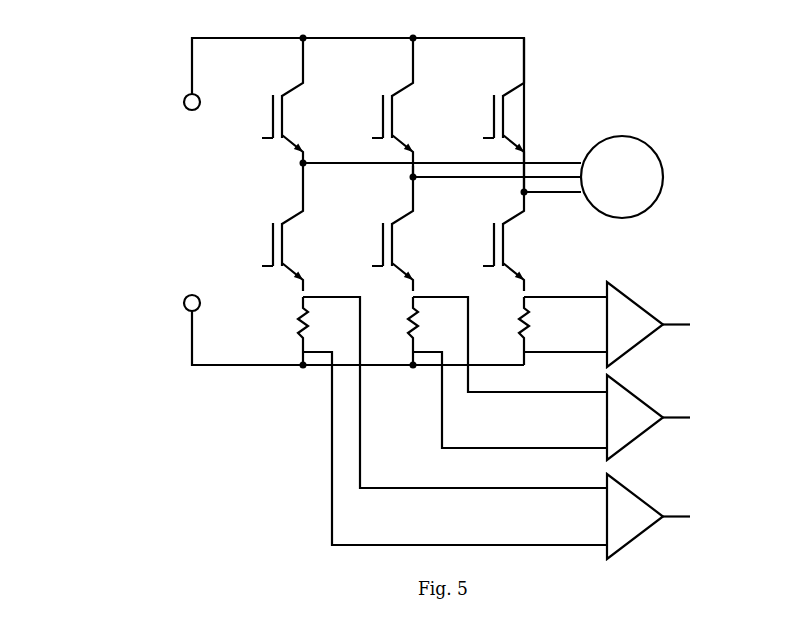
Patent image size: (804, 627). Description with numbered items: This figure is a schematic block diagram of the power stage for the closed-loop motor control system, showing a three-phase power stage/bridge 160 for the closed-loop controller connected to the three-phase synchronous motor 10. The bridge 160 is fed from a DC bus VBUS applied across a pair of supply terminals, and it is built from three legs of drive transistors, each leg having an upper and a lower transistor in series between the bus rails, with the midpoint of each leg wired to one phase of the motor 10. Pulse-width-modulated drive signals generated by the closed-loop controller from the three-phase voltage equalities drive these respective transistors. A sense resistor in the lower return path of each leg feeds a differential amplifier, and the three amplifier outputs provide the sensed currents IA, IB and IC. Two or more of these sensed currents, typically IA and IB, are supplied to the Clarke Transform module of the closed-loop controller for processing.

The three-phase power stage/bridge 160 is at (140, 114).
The synchronous motor 10 is at (652, 143).
The DC bus voltage terminals VBUS is at (200, 202).
The sensed current IA is at (666, 516).
The sensed current IB is at (665, 417).
The sensed current IC is at (666, 324).